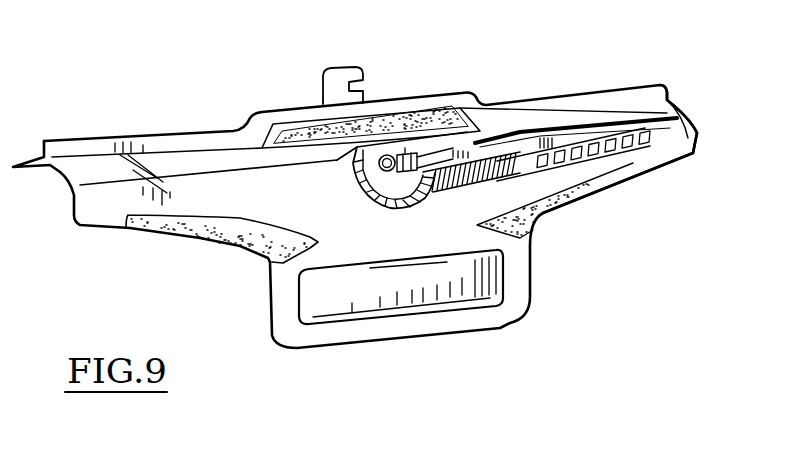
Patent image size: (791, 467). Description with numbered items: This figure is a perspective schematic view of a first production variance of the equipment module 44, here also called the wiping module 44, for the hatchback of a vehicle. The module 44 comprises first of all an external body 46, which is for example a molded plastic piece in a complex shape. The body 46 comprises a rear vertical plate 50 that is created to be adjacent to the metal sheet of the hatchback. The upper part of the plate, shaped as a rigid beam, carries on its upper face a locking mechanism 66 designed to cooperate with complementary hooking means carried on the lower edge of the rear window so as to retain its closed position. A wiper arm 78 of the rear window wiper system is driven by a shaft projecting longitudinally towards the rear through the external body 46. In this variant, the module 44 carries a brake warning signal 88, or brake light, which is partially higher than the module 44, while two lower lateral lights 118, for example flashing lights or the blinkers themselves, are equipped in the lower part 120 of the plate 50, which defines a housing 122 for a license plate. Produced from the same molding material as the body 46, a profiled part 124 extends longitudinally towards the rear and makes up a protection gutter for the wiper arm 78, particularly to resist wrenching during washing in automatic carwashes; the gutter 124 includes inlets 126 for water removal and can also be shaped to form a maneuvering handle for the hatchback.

The equipment module 44 is at (103, 255).
The external body 46 is at (697, 128).
The rear vertical plate 50 is at (670, 153).
The locking mechanism 66 is at (363, 66).
The wiper arm 78 is at (563, 125).
The brake warning signal 88 is at (437, 117).
The lower lateral lights 118 is at (228, 257).
The lower part 120 is at (410, 348).
The housing 122 is at (450, 278).
The profiled part 124 is at (453, 193).
The inlets 126 is at (535, 170).